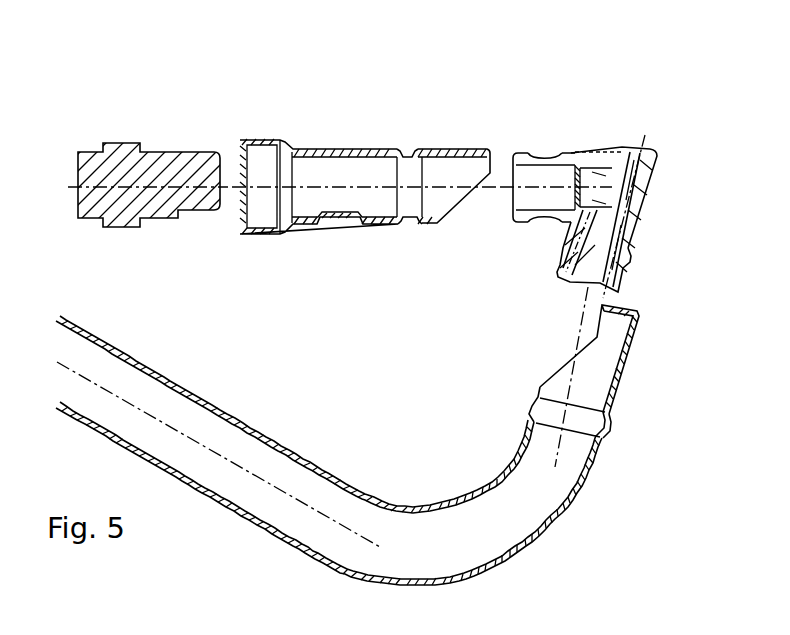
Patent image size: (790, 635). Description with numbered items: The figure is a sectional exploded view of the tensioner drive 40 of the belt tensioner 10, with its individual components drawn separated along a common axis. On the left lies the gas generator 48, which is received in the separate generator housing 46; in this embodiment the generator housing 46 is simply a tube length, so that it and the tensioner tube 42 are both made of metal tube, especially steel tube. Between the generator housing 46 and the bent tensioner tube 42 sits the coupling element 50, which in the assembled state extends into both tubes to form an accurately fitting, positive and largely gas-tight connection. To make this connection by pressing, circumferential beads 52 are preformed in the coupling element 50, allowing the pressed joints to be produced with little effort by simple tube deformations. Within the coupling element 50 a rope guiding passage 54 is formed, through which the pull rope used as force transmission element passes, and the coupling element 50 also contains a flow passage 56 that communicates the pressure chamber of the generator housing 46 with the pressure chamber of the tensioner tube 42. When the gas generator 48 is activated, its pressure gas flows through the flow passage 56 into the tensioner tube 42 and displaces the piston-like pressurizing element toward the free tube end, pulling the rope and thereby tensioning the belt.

The belt tensioner 10 is at (636, 110).
The tensioner drive 40 is at (620, 156).
The tensioner tube 42 is at (224, 408).
The generator housing 46 is at (347, 150).
The gas generator 48 is at (170, 168).
The coupling element 50 is at (658, 168).
The circumferential beads 52 is at (413, 146).
The rope guiding passage 54 is at (620, 213).
The flow passage 56 is at (593, 177).